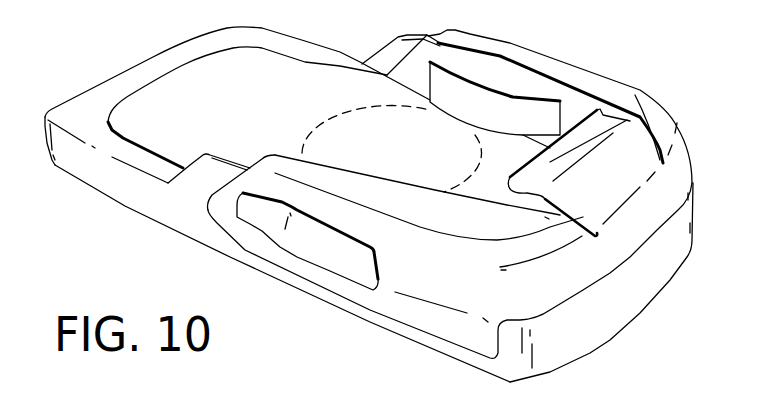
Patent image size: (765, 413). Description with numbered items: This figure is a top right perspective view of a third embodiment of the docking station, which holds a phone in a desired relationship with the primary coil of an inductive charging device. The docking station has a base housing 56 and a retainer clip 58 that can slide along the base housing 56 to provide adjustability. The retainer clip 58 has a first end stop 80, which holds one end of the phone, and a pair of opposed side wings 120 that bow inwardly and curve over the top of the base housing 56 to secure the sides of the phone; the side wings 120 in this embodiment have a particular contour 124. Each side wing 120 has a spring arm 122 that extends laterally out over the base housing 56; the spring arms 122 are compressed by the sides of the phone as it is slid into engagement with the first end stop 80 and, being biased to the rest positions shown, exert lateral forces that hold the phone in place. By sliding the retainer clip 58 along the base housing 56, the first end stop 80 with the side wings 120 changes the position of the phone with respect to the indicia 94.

The base housing 56 is at (172, 48).
The retainer clip 58 is at (412, 311).
The first end stop 80 is at (613, 147).
The indicia 94 is at (352, 110).
The side wings 120 is at (582, 77).
The spring arm 122 is at (485, 107).
The contour 124 is at (535, 86).